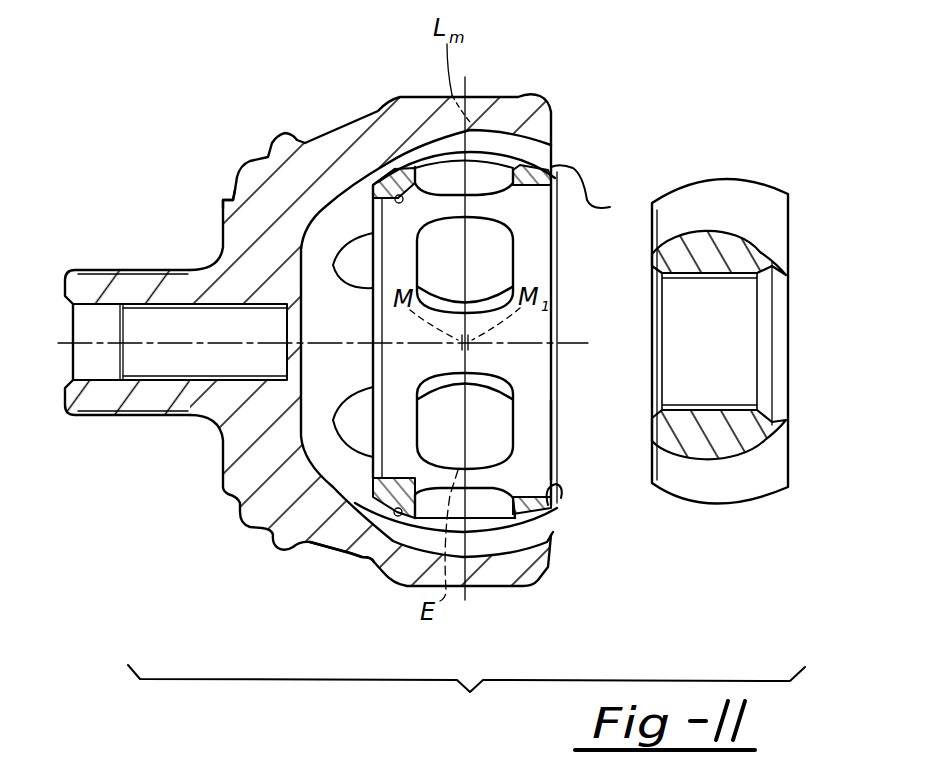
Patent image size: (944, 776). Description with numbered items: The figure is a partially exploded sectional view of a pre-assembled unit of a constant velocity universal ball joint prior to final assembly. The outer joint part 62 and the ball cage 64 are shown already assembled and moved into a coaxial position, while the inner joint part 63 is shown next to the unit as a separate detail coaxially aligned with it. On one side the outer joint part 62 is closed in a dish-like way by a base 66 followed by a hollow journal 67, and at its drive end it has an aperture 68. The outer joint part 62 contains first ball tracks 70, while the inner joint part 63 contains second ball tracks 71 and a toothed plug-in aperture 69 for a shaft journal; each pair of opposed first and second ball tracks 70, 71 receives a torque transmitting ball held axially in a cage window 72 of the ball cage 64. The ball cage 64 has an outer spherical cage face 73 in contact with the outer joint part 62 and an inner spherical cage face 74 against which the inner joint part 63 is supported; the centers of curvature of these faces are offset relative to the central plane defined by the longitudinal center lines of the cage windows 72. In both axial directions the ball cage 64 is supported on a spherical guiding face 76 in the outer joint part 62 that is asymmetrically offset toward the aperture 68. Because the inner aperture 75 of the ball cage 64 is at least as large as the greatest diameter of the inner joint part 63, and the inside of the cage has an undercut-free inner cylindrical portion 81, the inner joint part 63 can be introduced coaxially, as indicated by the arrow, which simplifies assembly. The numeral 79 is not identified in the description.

The outer joint part 62 is at (320, 150).
The inner joint part 63 is at (759, 253).
The ball cage 64 is at (598, 187).
The base 66 is at (233, 199).
The hollow journal 67 is at (135, 282).
The aperture 68 is at (567, 148).
The toothed plug-in aperture 69 is at (735, 280).
The first ball tracks 70 is at (527, 143).
The second ball tracks 71 is at (737, 202).
The cage window 72 is at (500, 140).
The outer spherical cage face 73 is at (388, 172).
The inner spherical cage face 74 is at (400, 167).
The inner aperture 75 is at (553, 443).
The spherical guiding face 76 is at (372, 559).
The end face of inner race 79 is at (740, 502).
The undercut-free inner cylindrical portion 81 is at (560, 497).